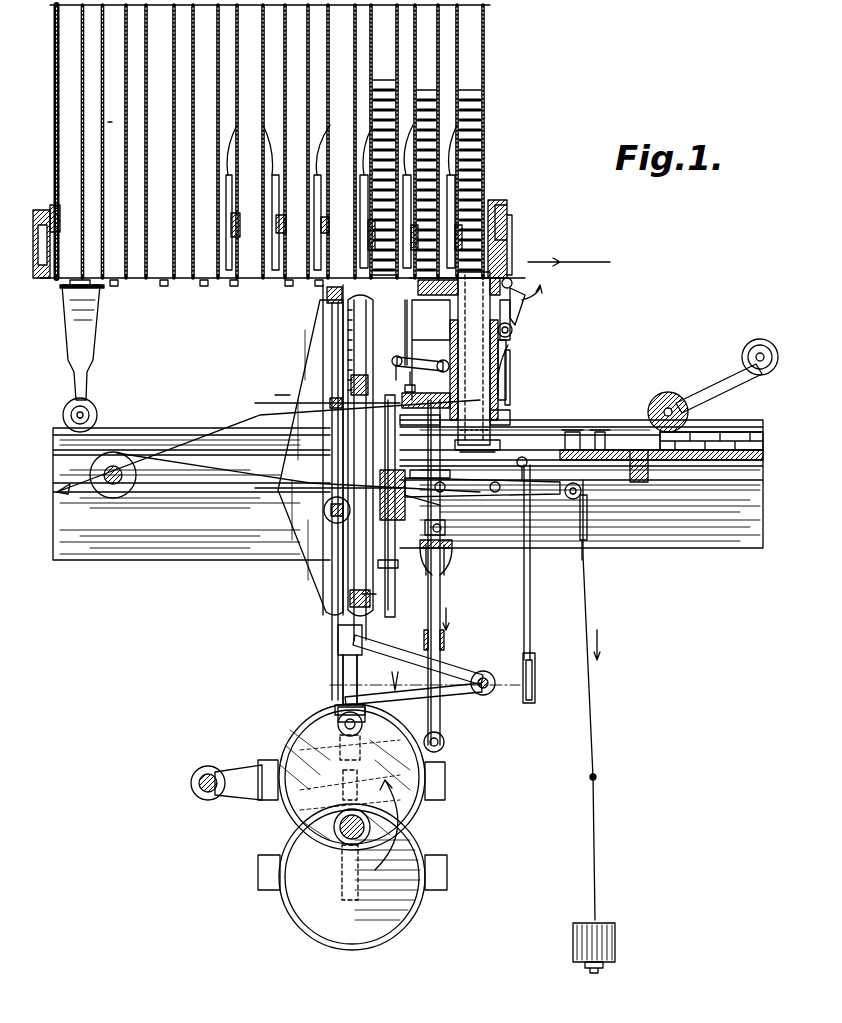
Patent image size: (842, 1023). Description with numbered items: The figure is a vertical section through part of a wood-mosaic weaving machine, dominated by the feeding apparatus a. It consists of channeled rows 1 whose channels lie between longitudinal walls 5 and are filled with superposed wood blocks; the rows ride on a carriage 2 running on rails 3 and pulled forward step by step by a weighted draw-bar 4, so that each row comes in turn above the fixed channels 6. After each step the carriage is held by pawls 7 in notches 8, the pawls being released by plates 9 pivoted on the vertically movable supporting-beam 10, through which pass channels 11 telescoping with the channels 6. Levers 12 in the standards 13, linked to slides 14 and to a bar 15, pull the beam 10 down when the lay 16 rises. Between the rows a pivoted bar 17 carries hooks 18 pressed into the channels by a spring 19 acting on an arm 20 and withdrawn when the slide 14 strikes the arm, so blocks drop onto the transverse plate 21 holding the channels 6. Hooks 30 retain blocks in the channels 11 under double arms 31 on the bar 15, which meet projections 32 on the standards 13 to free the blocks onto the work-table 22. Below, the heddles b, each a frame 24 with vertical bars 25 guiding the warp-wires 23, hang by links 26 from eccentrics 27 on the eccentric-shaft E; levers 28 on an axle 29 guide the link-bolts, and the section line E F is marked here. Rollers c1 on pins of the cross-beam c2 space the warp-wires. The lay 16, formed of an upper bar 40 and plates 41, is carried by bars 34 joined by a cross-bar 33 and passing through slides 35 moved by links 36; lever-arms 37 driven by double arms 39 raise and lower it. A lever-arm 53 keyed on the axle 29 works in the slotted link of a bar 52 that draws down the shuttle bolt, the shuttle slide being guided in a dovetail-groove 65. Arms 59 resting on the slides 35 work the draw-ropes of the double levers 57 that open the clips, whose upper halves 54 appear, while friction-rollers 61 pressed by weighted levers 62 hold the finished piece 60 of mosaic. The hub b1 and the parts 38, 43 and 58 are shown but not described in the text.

The channeled rows 1 is at (282, 141).
The feeding apparatus a is at (112, 113).
The carriage 2 is at (510, 210).
The rails 3 is at (110, 428).
The draw-bar 4 is at (597, 266).
The longitudinal walls 5 is at (488, 62).
The row of channels 6 is at (486, 320).
The pawls 7 is at (525, 322).
The notches 8 is at (205, 286).
The plates 9 is at (512, 335).
The supporting-beam 10 is at (457, 340).
The channels 11 is at (500, 440).
The levers 12 is at (425, 360).
The standards 13 is at (412, 310).
The slides 14 is at (405, 325).
The bar 15 is at (515, 360).
The lay 16 is at (420, 372).
The pivotally-arranged bar 17 is at (330, 230).
The hooks 18 is at (296, 278).
The spring 19 is at (480, 170).
The arm 20 is at (258, 278).
The transverse plate 21 is at (417, 290).
The work-table 22 is at (640, 483).
The warp-wires 23 is at (220, 470).
The frame 24 is at (340, 575).
The vertical bars 25 is at (371, 595).
The link 26 is at (343, 660).
The eccentric 27 is at (350, 935).
The lever 28 is at (455, 695).
The axle 29 is at (485, 670).
The hooks 30 is at (512, 410).
The double arm 31 is at (508, 380).
The projections 32 is at (512, 388).
The cross-bar 33 is at (448, 560).
The vertically-guided bars 34 is at (424, 565).
The slides 35 is at (485, 500).
The link 36 is at (570, 500).
The lever-arms 37 is at (235, 765).
The rod 38 is at (443, 605).
The double arm 39 is at (400, 795).
The upper bar 40 is at (395, 372).
The plates 41 is at (425, 428).
The standard 43 is at (575, 428).
The bar 52 is at (531, 605).
The lever-arm 53 is at (522, 690).
The upper halves of the clips 54 is at (608, 428).
The double lever 57 is at (588, 515).
The cord with weight 58 is at (598, 688).
The arm 59 is at (410, 525).
The finished piece of mosaic flooring 60 is at (715, 440).
The friction-rollers 61 is at (670, 392).
The weighted levers 62 is at (746, 350).
The dovetail-groove 65 is at (528, 465).
The eccentric-shaft E is at (292, 633).
The section line E F is at (373, 467).
The heddles b is at (375, 605).
The hub b' b1 is at (325, 508).
The rollers c1 is at (397, 506).
The cross-beam c2 is at (388, 570).